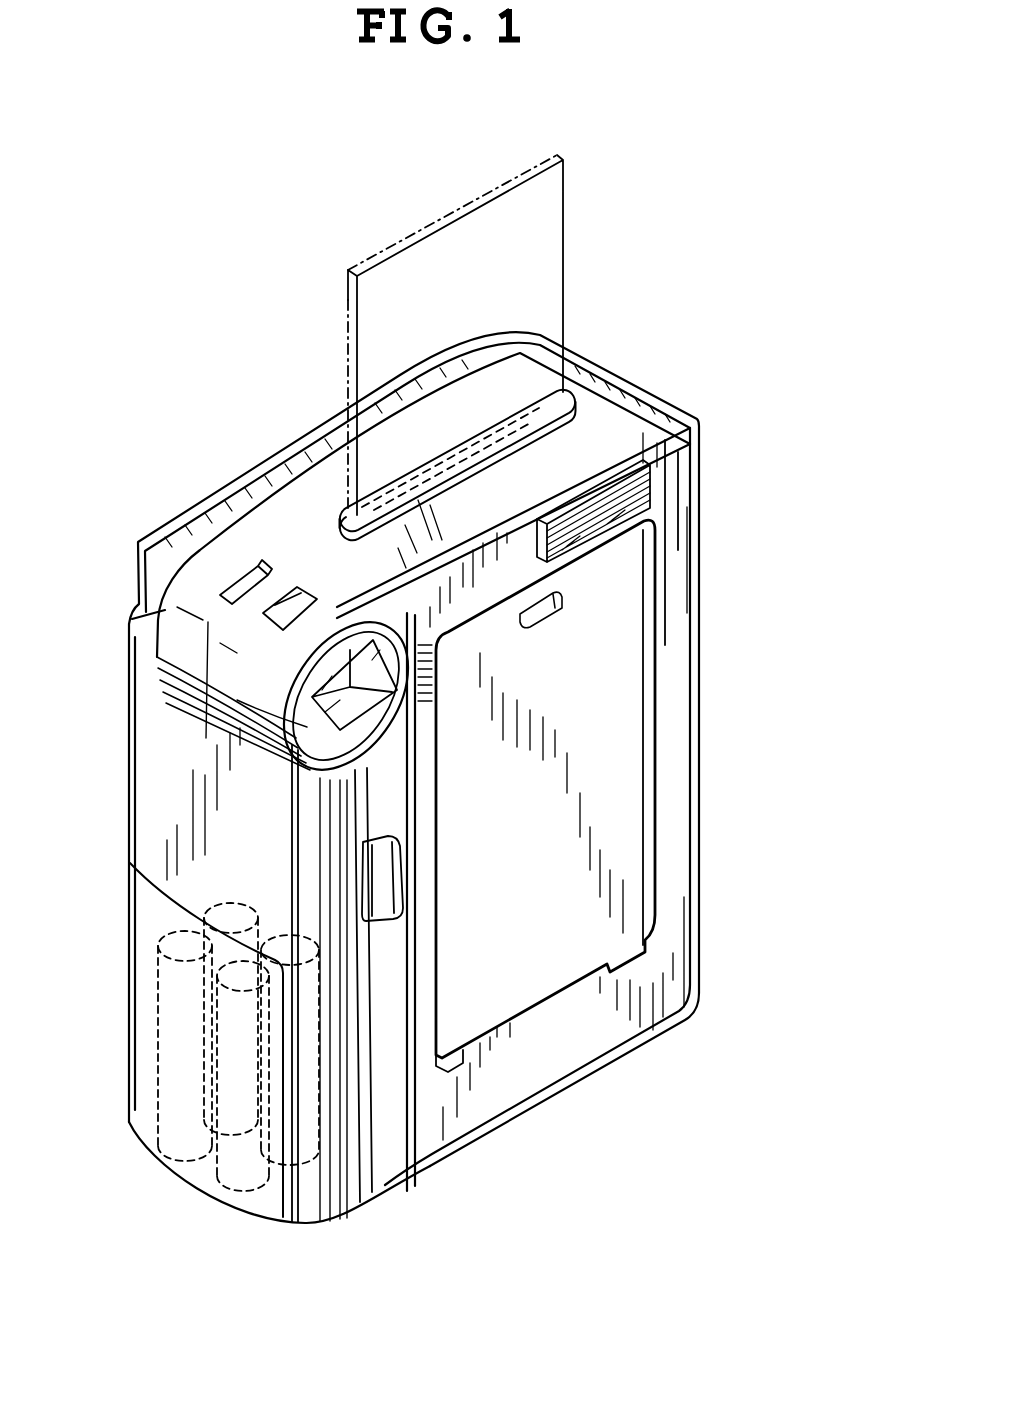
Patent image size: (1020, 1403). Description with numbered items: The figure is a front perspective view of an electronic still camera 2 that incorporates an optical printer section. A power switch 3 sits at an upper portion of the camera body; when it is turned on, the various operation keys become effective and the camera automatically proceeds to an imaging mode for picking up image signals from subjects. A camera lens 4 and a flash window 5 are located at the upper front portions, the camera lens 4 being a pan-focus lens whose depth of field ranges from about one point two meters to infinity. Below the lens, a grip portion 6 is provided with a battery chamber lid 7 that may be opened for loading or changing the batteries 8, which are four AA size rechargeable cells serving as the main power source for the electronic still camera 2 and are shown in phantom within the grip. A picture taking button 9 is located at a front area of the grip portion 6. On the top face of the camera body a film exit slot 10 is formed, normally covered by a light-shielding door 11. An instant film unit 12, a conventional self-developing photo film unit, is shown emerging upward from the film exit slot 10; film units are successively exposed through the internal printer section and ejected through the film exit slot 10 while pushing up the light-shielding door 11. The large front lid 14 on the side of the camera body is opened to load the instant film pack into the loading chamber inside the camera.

The electronic still camera 2 is at (641, 1078).
The power switch 3 is at (258, 566).
The camera lens 4 is at (362, 705).
The flash window 5 is at (650, 486).
The grip portion 6 is at (365, 1092).
The battery chamber lid 7 is at (141, 1127).
The batteries 8 is at (247, 1184).
The picture taking button 9 is at (396, 880).
The film exit slot 10 is at (485, 452).
The light-shielding door 11 is at (575, 392).
The instant film unit 12 is at (425, 228).
The front lid 14 is at (625, 790).